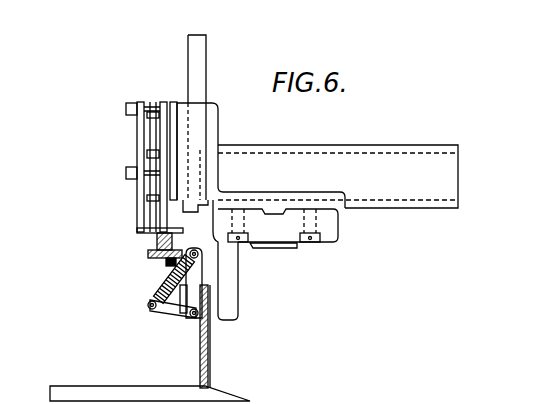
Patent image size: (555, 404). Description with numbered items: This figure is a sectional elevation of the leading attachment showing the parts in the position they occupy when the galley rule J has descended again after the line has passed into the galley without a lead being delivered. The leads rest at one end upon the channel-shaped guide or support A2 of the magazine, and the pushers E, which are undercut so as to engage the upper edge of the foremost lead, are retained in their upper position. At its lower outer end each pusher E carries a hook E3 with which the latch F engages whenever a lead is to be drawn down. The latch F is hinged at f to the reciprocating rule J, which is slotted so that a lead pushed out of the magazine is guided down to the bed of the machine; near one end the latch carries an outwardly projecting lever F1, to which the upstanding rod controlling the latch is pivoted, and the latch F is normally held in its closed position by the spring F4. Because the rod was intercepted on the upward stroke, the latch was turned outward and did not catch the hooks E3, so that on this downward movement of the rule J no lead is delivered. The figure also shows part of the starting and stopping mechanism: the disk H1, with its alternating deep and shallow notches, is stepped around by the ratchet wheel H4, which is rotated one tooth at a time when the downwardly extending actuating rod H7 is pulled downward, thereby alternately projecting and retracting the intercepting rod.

The pusher E is at (206, 78).
The guide or support A2 is at (338, 196).
The disk H1 is at (150, 148).
The ratchet wheel H4 is at (167, 130).
The actuating rod H7 is at (165, 190).
The hook E3 is at (192, 207).
The spring F4 is at (162, 280).
The latch F is at (183, 293).
The lever F1 is at (146, 312).
The hinge f is at (192, 317).
The galley rule J is at (208, 353).